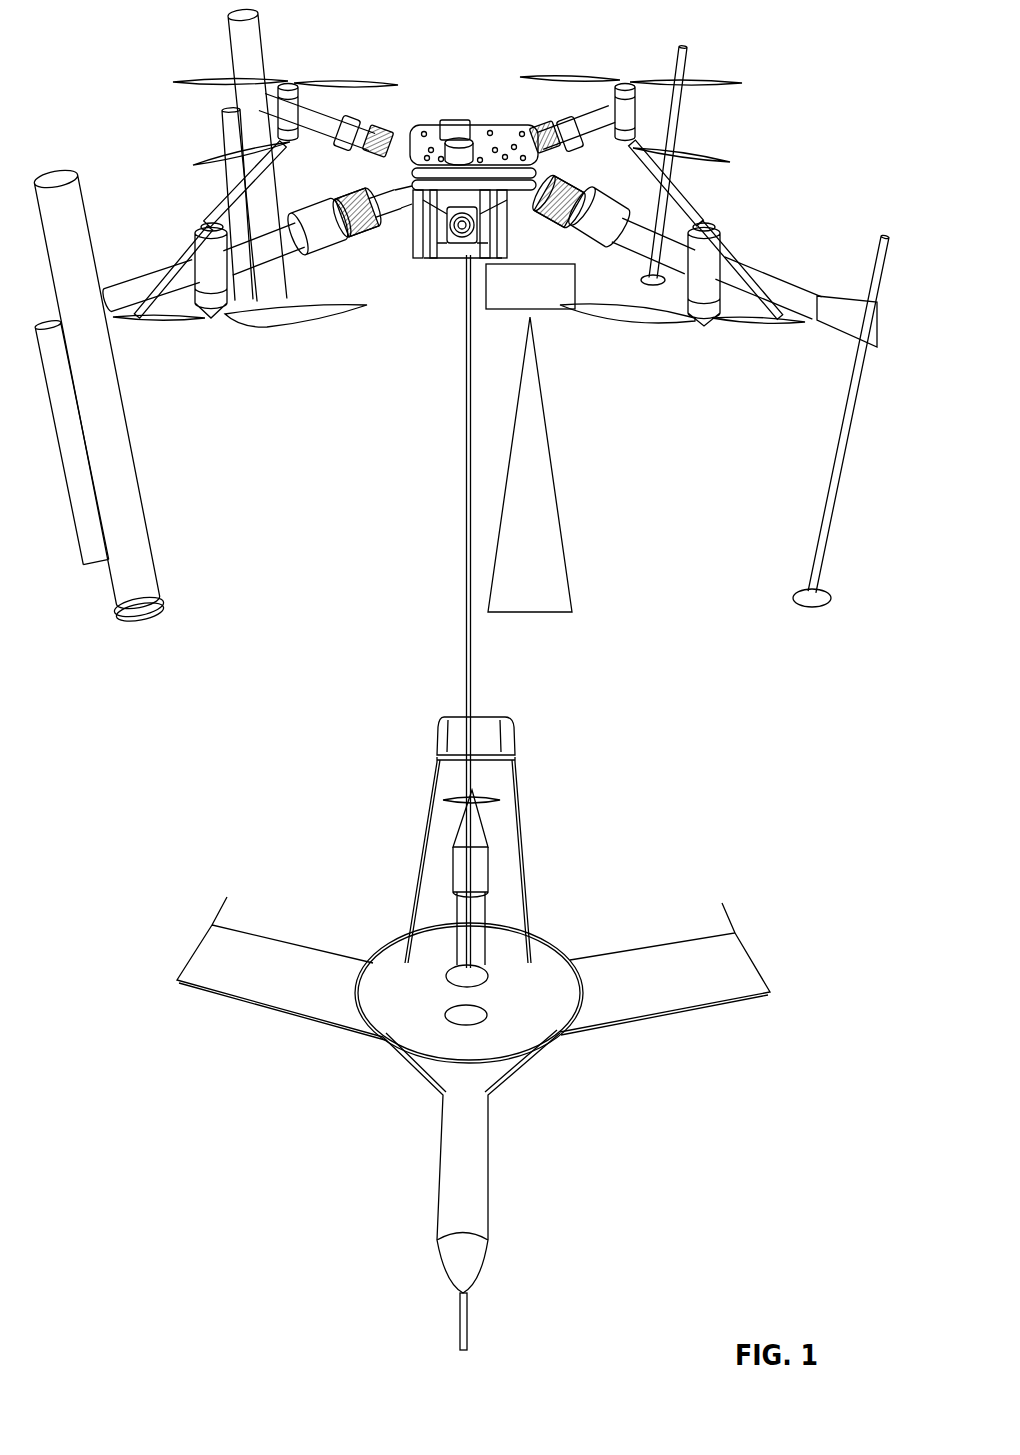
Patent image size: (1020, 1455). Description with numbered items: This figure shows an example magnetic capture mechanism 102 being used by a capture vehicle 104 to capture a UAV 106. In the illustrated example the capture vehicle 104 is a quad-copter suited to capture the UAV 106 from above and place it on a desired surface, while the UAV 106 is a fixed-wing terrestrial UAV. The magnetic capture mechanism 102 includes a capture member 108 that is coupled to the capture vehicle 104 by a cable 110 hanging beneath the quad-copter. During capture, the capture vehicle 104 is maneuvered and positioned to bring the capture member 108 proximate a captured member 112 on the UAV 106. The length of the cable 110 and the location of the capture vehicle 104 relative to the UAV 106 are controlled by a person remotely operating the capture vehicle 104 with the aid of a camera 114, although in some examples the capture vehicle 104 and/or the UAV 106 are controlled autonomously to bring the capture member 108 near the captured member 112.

The magnetic capture mechanism 102 is at (553, 945).
The capture vehicle 104 is at (797, 82).
The UAV 106 is at (725, 1117).
The capture member 108 is at (487, 960).
The cable 110 is at (471, 680).
The captured member 112 is at (445, 1013).
The camera 114 is at (540, 295).